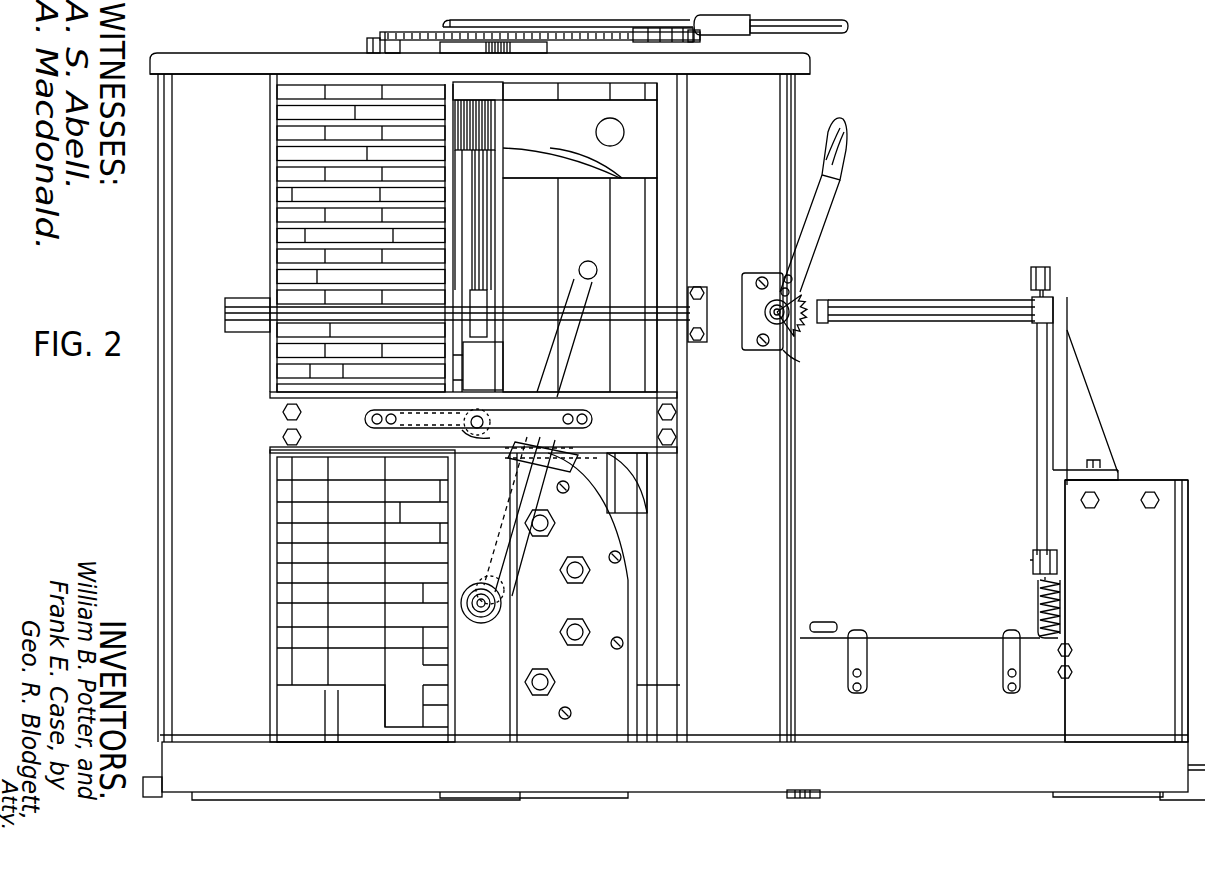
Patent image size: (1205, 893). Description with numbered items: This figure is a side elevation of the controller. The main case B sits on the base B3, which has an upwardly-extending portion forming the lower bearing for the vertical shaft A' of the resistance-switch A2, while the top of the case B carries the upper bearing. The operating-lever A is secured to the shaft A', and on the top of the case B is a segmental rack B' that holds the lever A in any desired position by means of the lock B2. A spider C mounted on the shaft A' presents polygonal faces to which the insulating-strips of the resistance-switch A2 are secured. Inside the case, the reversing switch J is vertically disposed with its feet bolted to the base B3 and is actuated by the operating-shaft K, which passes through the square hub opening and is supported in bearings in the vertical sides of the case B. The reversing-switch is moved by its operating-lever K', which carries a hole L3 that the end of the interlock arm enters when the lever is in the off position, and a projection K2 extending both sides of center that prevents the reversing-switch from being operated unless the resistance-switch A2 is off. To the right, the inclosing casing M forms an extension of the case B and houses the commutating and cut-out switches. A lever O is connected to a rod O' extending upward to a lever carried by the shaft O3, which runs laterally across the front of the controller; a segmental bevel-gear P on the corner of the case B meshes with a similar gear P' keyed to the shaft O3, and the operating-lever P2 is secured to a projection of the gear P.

The case B is at (480, 44).
The segmental rack B' is at (533, 26).
The operating-lever A is at (739, 17).
The lock B2 is at (690, 42).
The resistance-switch A2 is at (340, 253).
The spider C is at (580, 139).
The vertical shaft A' is at (466, 237).
The operating-lever of the reversing-switch K' is at (540, 428).
The hole L3 is at (548, 437).
The projection K2 is at (488, 443).
The switch J is at (578, 597).
The operating-shaft K is at (482, 623).
The segmental bevel-gear P is at (780, 333).
The operating-lever P2 is at (822, 196).
The bevel-gear P' is at (843, 328).
The shaft O3 is at (902, 318).
The rod O' is at (1054, 411).
The lever O is at (1017, 594).
The inclosing casing M is at (1126, 611).
The base B3 is at (674, 767).